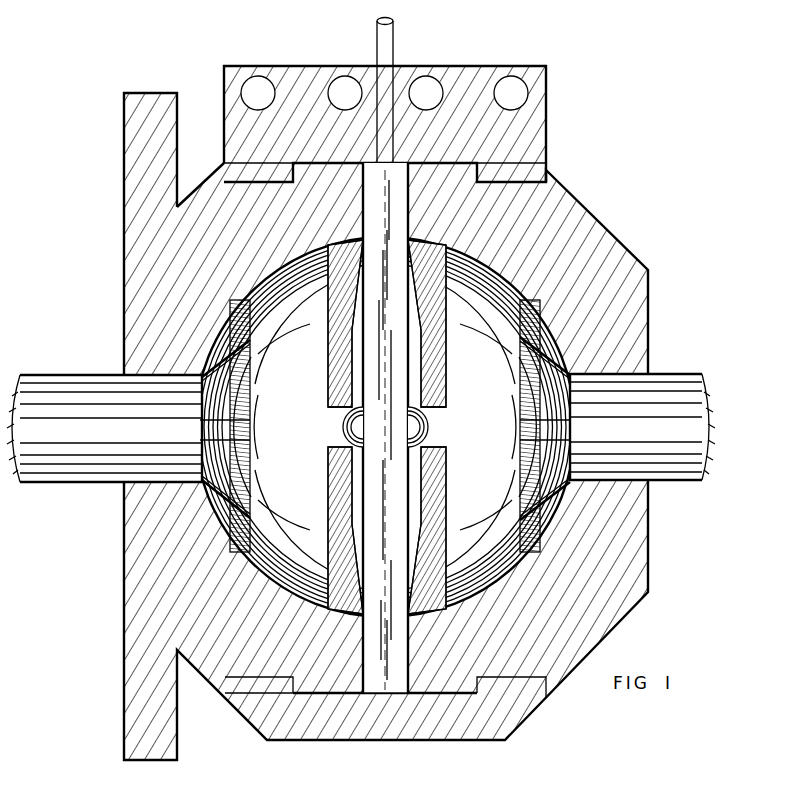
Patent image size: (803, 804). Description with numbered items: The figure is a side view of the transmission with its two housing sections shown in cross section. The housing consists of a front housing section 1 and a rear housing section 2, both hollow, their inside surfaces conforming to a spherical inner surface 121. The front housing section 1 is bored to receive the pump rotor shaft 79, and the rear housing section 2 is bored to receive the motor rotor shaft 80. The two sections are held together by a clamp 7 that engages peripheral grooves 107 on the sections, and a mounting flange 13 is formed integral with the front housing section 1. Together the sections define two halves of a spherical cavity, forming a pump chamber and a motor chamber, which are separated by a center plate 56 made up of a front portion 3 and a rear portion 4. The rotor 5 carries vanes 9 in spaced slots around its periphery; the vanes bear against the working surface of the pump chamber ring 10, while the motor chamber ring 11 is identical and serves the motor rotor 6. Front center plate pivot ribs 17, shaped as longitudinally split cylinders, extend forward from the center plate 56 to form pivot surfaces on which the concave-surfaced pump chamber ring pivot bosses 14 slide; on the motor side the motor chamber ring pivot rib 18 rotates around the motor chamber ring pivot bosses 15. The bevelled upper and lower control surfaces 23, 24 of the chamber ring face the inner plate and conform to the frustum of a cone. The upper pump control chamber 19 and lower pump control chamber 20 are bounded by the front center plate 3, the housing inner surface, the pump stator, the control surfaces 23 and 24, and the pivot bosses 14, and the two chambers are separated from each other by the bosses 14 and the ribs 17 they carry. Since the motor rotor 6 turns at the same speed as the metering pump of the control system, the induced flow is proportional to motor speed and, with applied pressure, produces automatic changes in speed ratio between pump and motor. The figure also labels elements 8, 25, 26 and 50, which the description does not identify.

The front housing section 1 is at (165, 287).
The rear housing section 2 is at (566, 245).
The front portion of center plate 3 is at (368, 214).
The rear portion of center plate 4 is at (389, 214).
The rotor 5 is at (252, 411).
The motor rotor 6 is at (521, 395).
The clamp 7 is at (546, 65).
The central shaft 8 is at (393, 47).
The vanes 9 is at (385, 422).
The pump chamber ring 10 is at (281, 462).
The motor chamber ring 11 is at (470, 437).
The mounting flange 13 is at (136, 117).
The pump chamber ring pivot bosses 14 is at (334, 414).
The motor chamber ring pivot bosses 15 is at (446, 402).
The front center plate pivot ribs 17 is at (350, 430).
The motor chamber ring pivot rib 18 is at (420, 427).
The upper pump control chamber 19 is at (340, 247).
The lower pump control chamber 20 is at (333, 616).
The upper chamber ring control surface 23 is at (330, 348).
The lower chamber ring control surface 24 is at (333, 507).
The upper right vane 25 is at (442, 338).
The lower right vane 26 is at (442, 503).
The housing 50 is at (576, 196).
The center plate 56 is at (410, 694).
The pump rotor shaft 79 is at (83, 483).
The motor rotor shaft 80 is at (683, 483).
The peripheral grooves 107 is at (224, 165).
The spherical inner surface 121 is at (332, 243).